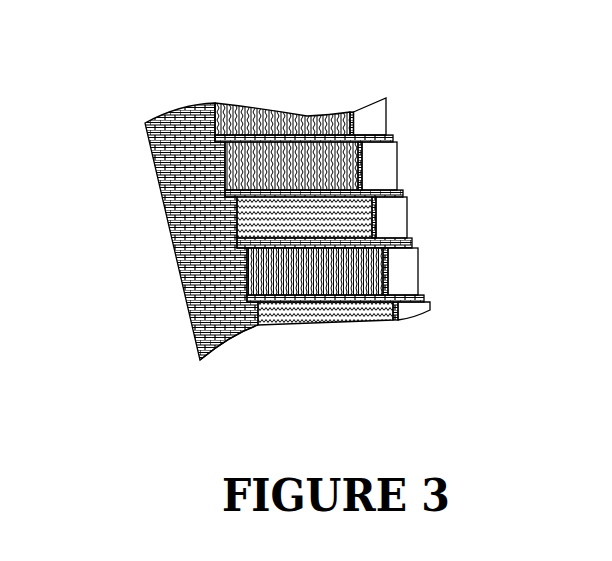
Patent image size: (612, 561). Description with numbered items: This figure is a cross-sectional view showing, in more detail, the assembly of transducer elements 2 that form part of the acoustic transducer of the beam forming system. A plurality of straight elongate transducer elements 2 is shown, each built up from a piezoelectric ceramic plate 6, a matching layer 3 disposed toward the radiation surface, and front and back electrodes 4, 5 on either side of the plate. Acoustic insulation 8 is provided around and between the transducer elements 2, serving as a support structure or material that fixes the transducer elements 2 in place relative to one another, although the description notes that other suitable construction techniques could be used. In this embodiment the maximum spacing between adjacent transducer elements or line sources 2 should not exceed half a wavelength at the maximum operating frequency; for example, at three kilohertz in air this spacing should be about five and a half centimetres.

The transducer element 2 is at (246, 305).
The matching layer 3 is at (432, 292).
The front electrode 4 is at (212, 92).
The back electrode 5 is at (344, 96).
The piezoelectric ceramic plate 6 is at (279, 167).
The acoustic insulation 8 is at (190, 325).